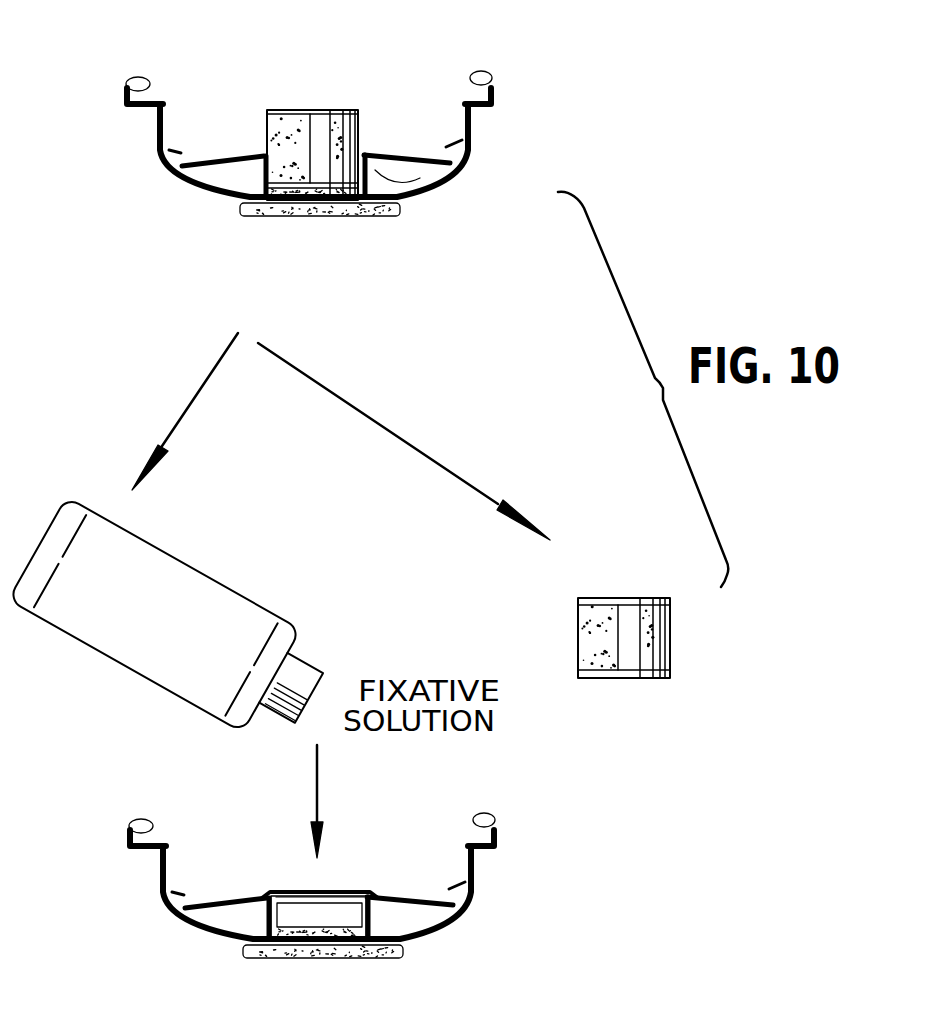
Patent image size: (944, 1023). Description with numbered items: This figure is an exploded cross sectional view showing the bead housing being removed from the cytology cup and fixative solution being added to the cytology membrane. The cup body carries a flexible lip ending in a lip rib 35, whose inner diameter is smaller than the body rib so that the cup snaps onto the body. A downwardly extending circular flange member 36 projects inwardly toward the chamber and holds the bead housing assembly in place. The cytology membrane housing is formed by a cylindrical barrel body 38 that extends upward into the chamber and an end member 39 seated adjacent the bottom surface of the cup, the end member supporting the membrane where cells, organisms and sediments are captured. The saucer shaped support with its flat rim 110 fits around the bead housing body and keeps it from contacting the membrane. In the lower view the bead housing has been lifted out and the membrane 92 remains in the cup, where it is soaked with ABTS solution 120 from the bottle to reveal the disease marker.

The lip rib 35 is at (477, 72).
The circular flange member 36 is at (178, 157).
The cylindrical barrel body 38 is at (430, 178).
The end member 39 is at (340, 217).
The membrane 92 is at (348, 888).
The flat rim 110 is at (318, 891).
The ABTS solution 120 is at (192, 638).